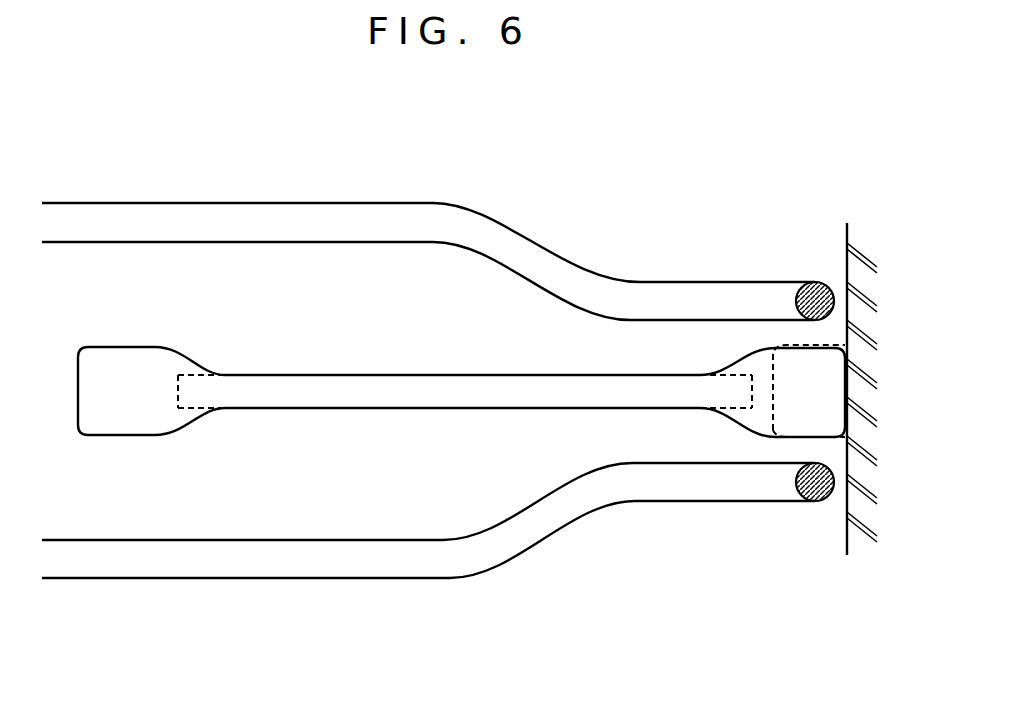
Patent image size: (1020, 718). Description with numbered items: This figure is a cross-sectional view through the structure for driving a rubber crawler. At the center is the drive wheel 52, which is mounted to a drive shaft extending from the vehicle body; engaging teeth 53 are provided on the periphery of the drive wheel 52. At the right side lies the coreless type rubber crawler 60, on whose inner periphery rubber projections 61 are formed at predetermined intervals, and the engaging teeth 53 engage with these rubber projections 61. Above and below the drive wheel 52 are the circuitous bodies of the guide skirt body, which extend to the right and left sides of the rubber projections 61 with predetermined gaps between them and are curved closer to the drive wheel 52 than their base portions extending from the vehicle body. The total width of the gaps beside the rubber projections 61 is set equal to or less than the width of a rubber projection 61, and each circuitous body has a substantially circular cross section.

The drive wheel 52 is at (308, 400).
The engaging teeth 53 is at (93, 368).
The rubber crawler 60 is at (905, 412).
The rubber projections 61 is at (851, 340).